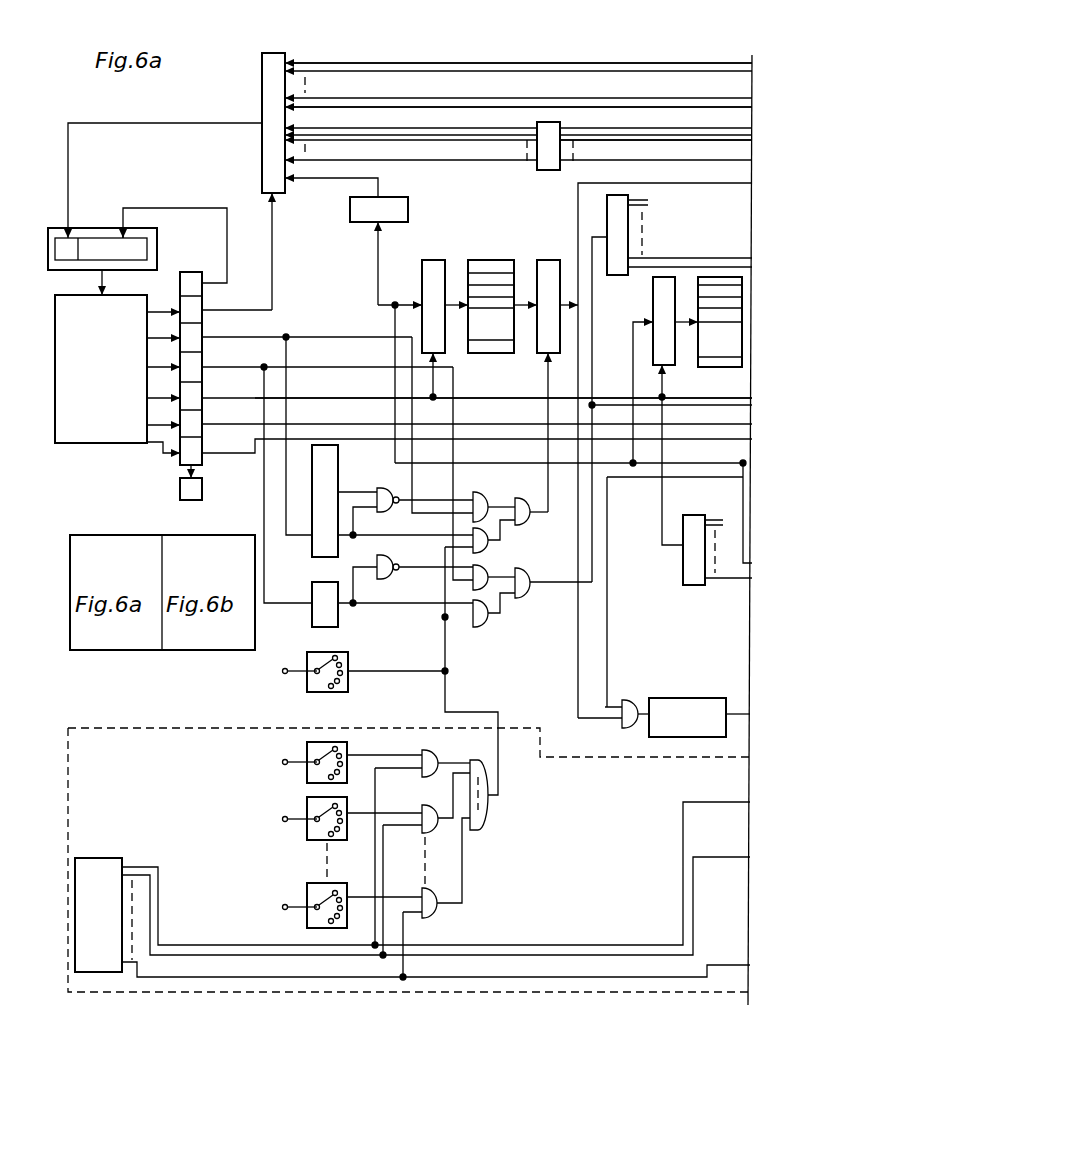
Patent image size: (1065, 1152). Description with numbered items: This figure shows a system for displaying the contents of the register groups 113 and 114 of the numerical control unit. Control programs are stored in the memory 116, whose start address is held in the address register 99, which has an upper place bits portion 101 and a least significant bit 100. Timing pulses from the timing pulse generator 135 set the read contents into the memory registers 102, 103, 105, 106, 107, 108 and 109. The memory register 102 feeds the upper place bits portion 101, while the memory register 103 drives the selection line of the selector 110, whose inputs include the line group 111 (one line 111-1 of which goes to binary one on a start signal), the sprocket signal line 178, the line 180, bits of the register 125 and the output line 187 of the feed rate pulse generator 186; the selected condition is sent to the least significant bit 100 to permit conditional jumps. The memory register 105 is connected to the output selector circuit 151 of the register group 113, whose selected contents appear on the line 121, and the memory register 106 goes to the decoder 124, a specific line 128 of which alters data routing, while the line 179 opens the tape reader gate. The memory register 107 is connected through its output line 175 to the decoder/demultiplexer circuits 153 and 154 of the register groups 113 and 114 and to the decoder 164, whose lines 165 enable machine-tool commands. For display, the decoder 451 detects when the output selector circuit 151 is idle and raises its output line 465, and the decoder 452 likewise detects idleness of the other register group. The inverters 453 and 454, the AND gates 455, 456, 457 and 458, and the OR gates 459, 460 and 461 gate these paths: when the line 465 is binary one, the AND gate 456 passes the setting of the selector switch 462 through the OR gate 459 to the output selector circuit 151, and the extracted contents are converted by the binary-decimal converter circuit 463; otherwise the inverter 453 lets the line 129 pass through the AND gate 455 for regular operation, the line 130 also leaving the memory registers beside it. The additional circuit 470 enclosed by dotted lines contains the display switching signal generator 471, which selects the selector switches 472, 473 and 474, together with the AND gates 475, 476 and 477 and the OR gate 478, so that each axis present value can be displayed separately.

The address register 99 is at (48, 264).
The least significant bit of address register 100 is at (48, 281).
The upper place bits portion of address register 101 is at (146, 227).
The memory register 102 is at (186, 272).
The memory register 103 is at (202, 303).
The memory register 105 is at (202, 331).
The memory register 106 is at (202, 360).
The memory register 107 is at (202, 390).
The memory register 108 is at (202, 418).
The memory register 109 is at (202, 446).
The selector 110 is at (263, 72).
The line group 111 is at (415, 104).
The line of line group 111-1 is at (577, 72).
The register group 113 is at (482, 260).
The register group 114 is at (715, 368).
The memory 116 is at (80, 443).
The line 121 is at (747, 183).
The decoder 124 is at (632, 193).
The register 125 is at (547, 122).
The line 128 is at (722, 258).
The line 129 is at (309, 345).
The line 130 is at (311, 373).
The timing pulse generator 135 is at (202, 489).
The output selector circuit 151 is at (548, 260).
The decoder/demultiplexer circuit 153 is at (430, 260).
The decoder/demultiplexer circuit 154 is at (652, 301).
The decoder 164 is at (695, 515).
The lines 165 is at (722, 578).
The output line of memory register 175 is at (305, 403).
The signal line 178 is at (633, 110).
The line 179 is at (661, 258).
The line 180 is at (749, 137).
The feed rate pulse generator 186 is at (408, 204).
The output line 187 is at (382, 180).
The decoder 451 is at (338, 450).
The decoder 452 is at (316, 582).
The inverter 453 is at (378, 480).
The inverter 454 is at (387, 568).
The AND gate 455 is at (486, 493).
The AND gate 456 is at (490, 536).
The AND gate 457 is at (490, 570).
The AND gate 458 is at (481, 627).
The OR gate 459 is at (528, 491).
The OR gate 460 is at (524, 592).
The OR gate 461 is at (632, 700).
The selector switch 462 is at (335, 655).
The binary-decimal converter circuit 463 is at (697, 692).
The output line of decoder 465 is at (376, 523).
The device 470 is at (116, 728).
The display switching signal generator 471 is at (99, 858).
The selector switch 472 is at (348, 748).
The selector switch 473 is at (307, 805).
The selector switch 474 is at (308, 897).
The AND gate 475 is at (437, 756).
The AND gate 476 is at (440, 832).
The AND gate 477 is at (437, 913).
The OR gate 478 is at (490, 805).